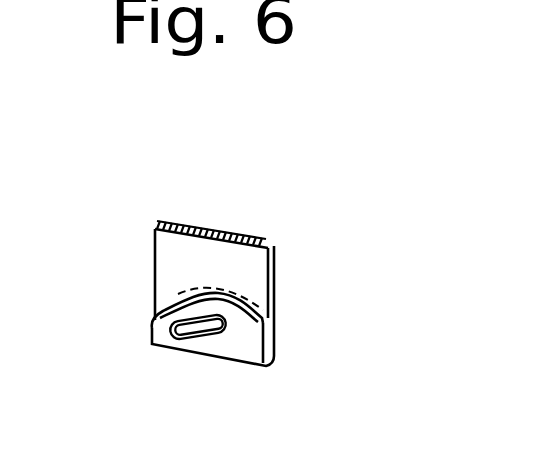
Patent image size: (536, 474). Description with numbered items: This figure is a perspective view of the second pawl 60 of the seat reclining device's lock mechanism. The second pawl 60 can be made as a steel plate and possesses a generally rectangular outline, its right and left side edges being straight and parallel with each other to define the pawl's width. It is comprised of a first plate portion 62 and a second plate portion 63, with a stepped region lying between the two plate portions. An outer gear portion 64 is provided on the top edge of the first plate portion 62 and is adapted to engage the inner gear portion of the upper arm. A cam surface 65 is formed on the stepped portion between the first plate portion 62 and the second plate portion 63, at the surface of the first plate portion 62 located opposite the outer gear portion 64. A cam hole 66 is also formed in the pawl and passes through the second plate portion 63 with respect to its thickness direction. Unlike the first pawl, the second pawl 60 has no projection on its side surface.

The second pawl 60 is at (210, 247).
The first plate portion 62 is at (162, 272).
The second plate portion 63 is at (245, 352).
The outer gear portion 64 is at (235, 232).
The cam surface 65 is at (252, 302).
The cam hole 66 is at (190, 329).